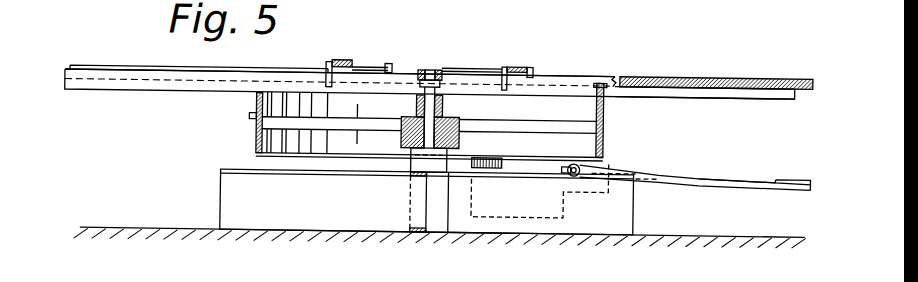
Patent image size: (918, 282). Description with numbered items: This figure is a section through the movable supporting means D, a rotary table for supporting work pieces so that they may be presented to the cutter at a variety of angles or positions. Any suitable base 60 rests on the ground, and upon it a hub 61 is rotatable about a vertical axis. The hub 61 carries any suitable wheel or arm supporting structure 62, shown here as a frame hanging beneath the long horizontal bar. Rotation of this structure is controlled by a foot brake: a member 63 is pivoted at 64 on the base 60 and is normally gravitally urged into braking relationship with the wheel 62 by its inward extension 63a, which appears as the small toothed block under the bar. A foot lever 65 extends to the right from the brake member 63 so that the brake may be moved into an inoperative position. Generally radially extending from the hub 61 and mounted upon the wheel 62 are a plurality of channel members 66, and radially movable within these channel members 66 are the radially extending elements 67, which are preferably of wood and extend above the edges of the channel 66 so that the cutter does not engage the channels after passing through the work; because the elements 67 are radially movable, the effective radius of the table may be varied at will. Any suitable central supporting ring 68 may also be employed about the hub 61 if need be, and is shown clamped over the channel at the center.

The base 60 is at (230, 185).
The hub 61 is at (447, 112).
The wheel or arm supporting structure 62 is at (257, 133).
The brake member 63 is at (607, 156).
The inward extension 63a is at (493, 162).
The pivot 64 is at (575, 157).
The foot lever 65 is at (752, 173).
The channel members 66 is at (108, 85).
The radially extending elements 67 is at (118, 52).
The central supporting ring 68 is at (518, 61).
The movable supporting means D is at (579, 67).